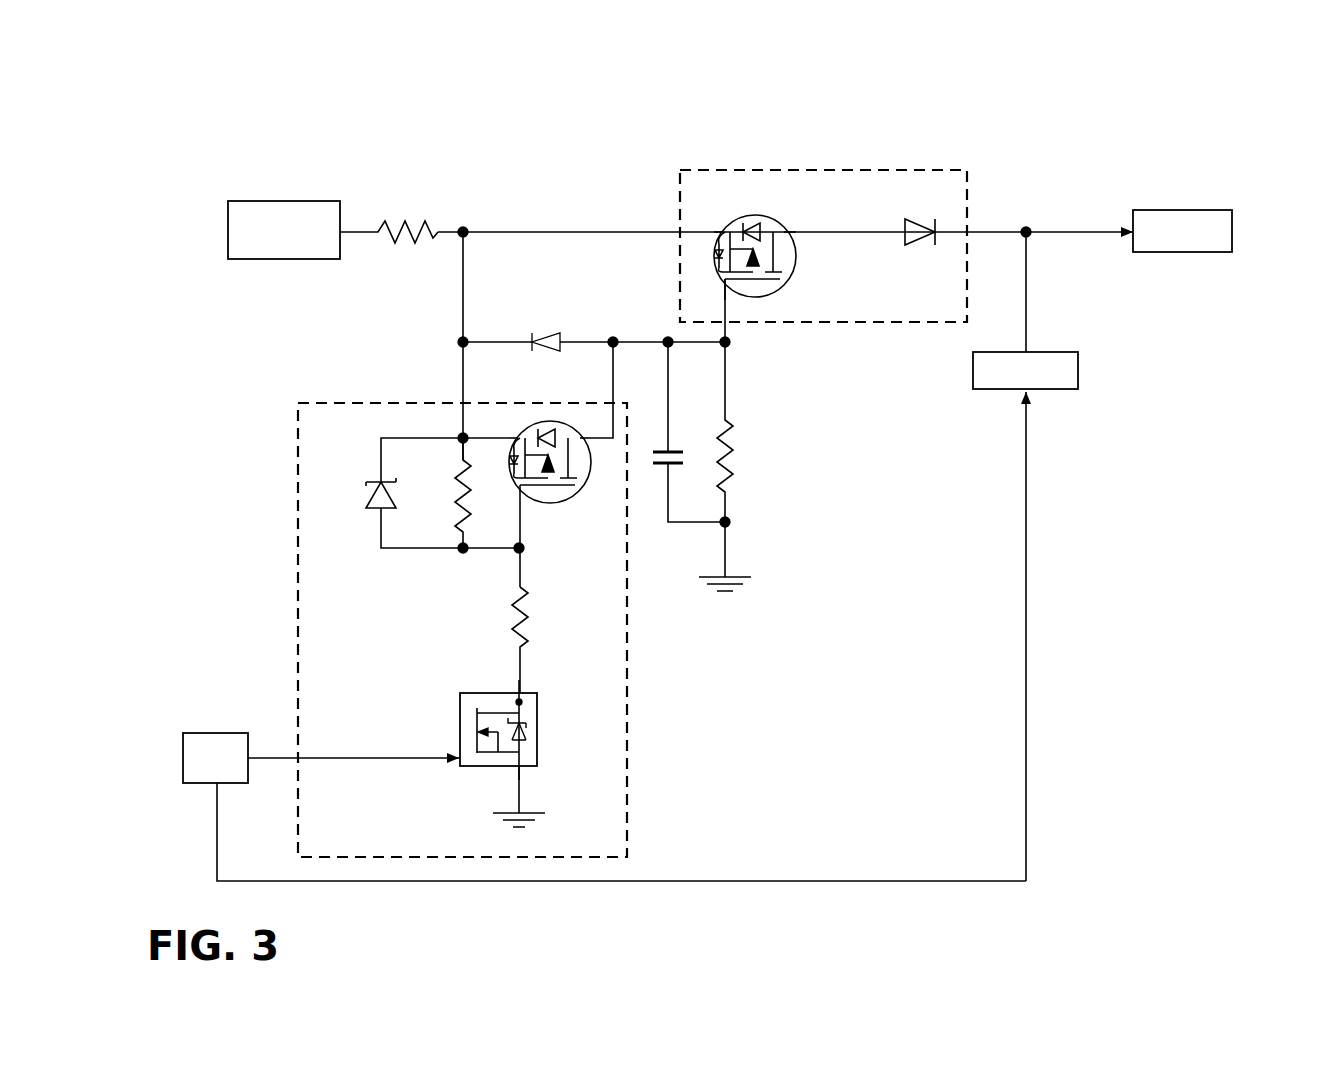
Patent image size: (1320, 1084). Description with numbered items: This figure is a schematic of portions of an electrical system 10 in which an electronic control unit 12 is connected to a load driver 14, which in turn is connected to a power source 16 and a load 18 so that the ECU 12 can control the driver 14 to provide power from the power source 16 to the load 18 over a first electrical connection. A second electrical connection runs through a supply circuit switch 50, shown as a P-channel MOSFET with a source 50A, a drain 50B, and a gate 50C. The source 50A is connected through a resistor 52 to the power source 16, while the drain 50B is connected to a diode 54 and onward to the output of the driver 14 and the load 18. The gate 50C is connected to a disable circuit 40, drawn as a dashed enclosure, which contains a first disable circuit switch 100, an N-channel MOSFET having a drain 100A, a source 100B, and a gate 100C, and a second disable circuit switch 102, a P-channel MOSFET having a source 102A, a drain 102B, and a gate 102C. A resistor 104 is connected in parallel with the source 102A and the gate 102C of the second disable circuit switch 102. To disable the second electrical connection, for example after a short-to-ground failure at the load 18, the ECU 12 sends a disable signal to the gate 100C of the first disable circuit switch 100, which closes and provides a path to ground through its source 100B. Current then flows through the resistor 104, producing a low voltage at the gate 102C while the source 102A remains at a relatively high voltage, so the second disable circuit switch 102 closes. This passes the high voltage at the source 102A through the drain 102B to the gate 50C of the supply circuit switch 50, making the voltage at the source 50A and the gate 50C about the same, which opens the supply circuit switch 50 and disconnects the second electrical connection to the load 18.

The electrical system 10 is at (1046, 96).
The electronic control unit 12 is at (220, 732).
The load driver 14 is at (1052, 389).
The power source 16 is at (280, 200).
The load 18 is at (1179, 210).
The disable circuit 40 is at (684, 681).
The supply circuit switch 50 is at (746, 196).
The source 50A is at (712, 228).
The drain 50B is at (792, 228).
The gate 50C is at (718, 291).
The resistor 52 is at (421, 212).
The diode 54 is at (920, 192).
The first disable circuit switch 100 is at (541, 743).
The drain 100A is at (515, 688).
The source 100B is at (510, 773).
The gate 100C is at (456, 769).
The second disable circuit switch 102 is at (584, 511).
The source 102A is at (502, 432).
The drain 102B is at (596, 449).
The gate 102C is at (526, 509).
The resistor 104 is at (451, 480).